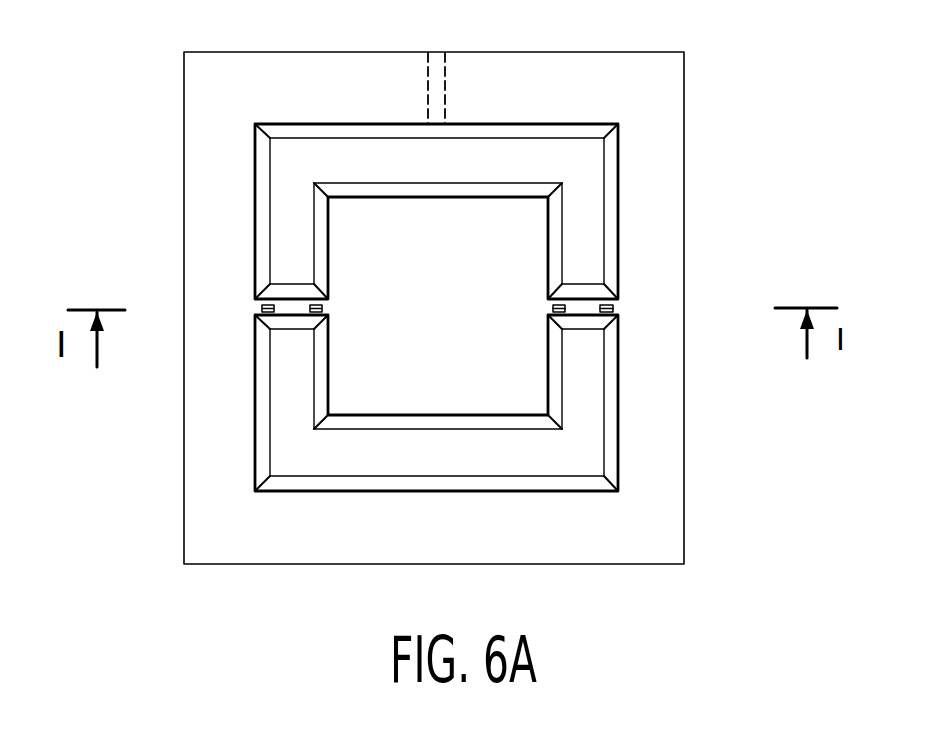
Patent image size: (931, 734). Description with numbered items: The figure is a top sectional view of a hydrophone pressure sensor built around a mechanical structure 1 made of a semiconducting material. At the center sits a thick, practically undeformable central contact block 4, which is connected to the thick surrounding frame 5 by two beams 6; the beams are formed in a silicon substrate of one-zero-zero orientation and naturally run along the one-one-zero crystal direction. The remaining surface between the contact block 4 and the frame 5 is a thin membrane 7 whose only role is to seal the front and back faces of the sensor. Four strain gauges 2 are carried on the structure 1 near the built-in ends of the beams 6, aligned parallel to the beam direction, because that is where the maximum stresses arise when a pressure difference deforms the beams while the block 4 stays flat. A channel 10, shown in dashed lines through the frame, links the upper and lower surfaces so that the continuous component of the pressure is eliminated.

The mechanical structure 1 is at (405, 284).
The strain gauges 2 is at (316, 324).
The central contact block 4 is at (451, 297).
The frame 5 is at (203, 172).
The beams 6 is at (290, 293).
The membrane 7 is at (588, 417).
The channel 10 is at (449, 70).